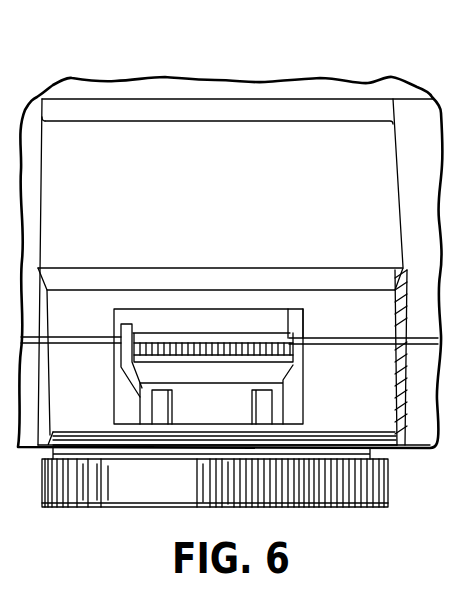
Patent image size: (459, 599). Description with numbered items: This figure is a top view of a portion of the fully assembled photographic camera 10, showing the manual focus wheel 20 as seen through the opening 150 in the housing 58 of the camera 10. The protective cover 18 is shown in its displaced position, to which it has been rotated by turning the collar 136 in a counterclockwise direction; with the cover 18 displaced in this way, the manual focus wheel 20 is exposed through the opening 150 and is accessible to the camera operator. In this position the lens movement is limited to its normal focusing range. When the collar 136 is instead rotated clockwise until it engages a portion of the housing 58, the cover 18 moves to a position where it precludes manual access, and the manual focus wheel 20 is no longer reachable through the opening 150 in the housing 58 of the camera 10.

The photographic camera 10 is at (307, 82).
The cover 18 is at (123, 333).
The manual focus wheel 20 is at (238, 352).
The housing 58 is at (347, 315).
The opening 150 is at (200, 302).
The collar 136 is at (379, 482).